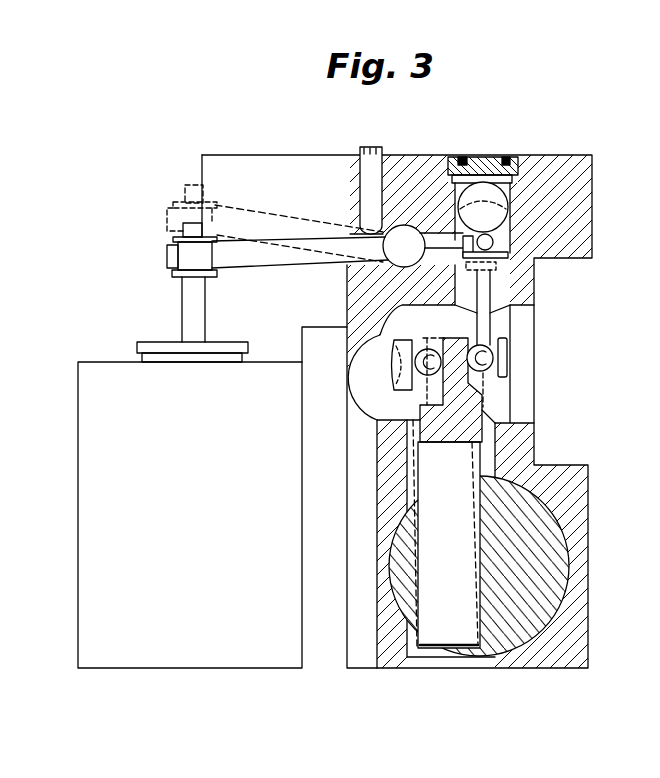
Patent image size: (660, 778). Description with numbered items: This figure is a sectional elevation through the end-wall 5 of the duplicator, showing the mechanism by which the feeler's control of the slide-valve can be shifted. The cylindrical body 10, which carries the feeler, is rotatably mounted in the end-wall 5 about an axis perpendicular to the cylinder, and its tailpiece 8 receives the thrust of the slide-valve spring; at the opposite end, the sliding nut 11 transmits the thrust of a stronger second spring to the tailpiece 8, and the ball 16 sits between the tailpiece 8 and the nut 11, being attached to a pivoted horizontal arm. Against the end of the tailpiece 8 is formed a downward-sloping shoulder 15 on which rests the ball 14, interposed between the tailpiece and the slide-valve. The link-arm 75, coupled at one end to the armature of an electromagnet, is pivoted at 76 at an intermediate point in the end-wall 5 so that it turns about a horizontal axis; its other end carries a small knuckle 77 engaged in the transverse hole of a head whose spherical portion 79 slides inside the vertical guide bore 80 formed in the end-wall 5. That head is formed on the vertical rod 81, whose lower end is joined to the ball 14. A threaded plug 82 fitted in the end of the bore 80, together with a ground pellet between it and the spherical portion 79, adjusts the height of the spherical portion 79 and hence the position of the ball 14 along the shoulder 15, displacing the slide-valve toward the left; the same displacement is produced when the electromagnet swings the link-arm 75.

The end-wall 5 is at (389, 157).
The tailpiece 8 is at (465, 620).
The cylindrical body 10 is at (553, 562).
The sliding nut 11 is at (393, 368).
The ball 14 is at (495, 352).
The shoulder 15 is at (483, 375).
The ball 16 is at (393, 340).
The link-arm 75 is at (240, 244).
The pivot 76 is at (398, 233).
The knuckle 77 is at (493, 240).
The spherical portion 79 is at (495, 213).
The guide bore 80 is at (505, 190).
The vertical rod 81 is at (485, 300).
The threaded plug 82 is at (478, 160).